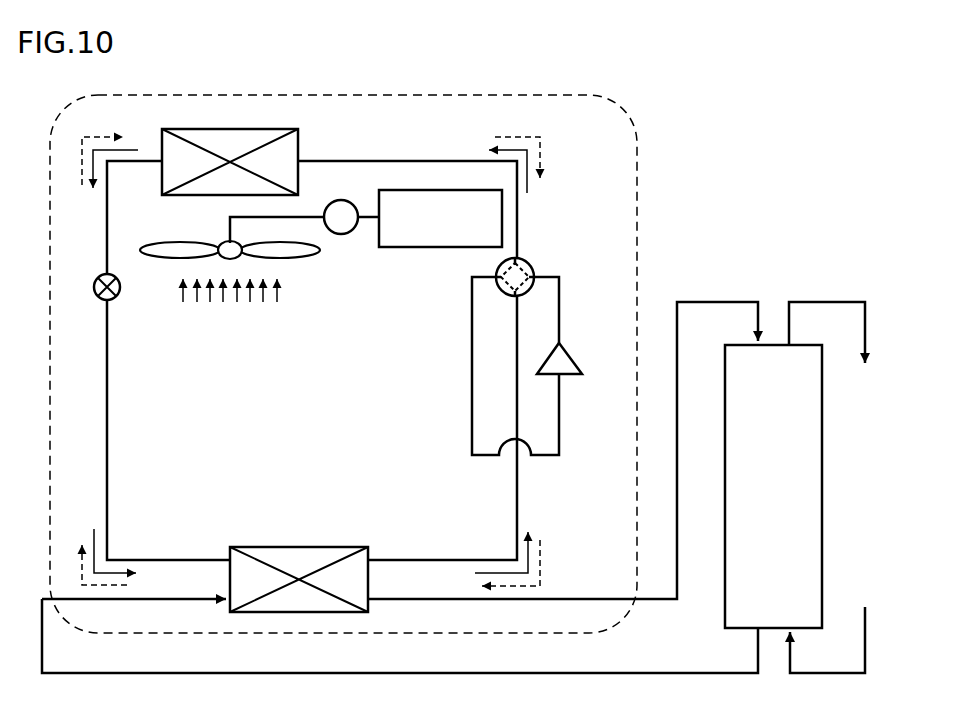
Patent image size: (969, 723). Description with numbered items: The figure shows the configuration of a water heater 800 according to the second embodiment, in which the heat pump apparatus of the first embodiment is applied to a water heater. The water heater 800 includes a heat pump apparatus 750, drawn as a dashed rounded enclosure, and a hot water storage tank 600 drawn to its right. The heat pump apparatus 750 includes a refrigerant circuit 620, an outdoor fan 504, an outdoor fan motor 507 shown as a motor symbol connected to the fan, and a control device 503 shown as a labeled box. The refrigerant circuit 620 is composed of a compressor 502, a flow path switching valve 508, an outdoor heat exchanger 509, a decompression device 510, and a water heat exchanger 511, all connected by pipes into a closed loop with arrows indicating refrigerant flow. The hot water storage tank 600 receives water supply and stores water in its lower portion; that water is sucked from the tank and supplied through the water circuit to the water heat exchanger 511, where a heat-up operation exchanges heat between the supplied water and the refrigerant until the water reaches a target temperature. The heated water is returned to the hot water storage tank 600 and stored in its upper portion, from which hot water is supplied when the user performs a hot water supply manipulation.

The water heater 800 is at (694, 67).
The heat pump apparatus 750 is at (637, 183).
The air heat exchanger 509 is at (267, 128).
The water heat exchanger 511 is at (332, 547).
The outdoor fan 504 is at (160, 261).
The outdoor fan motor 507 is at (341, 235).
The control device 503 is at (450, 189).
The expansion valve 510 is at (97, 297).
The refrigerant circuit 620 is at (102, 372).
The compressor 502 is at (573, 357).
The four-way valve 508 is at (533, 259).
The hot water storage tank 600 is at (723, 615).